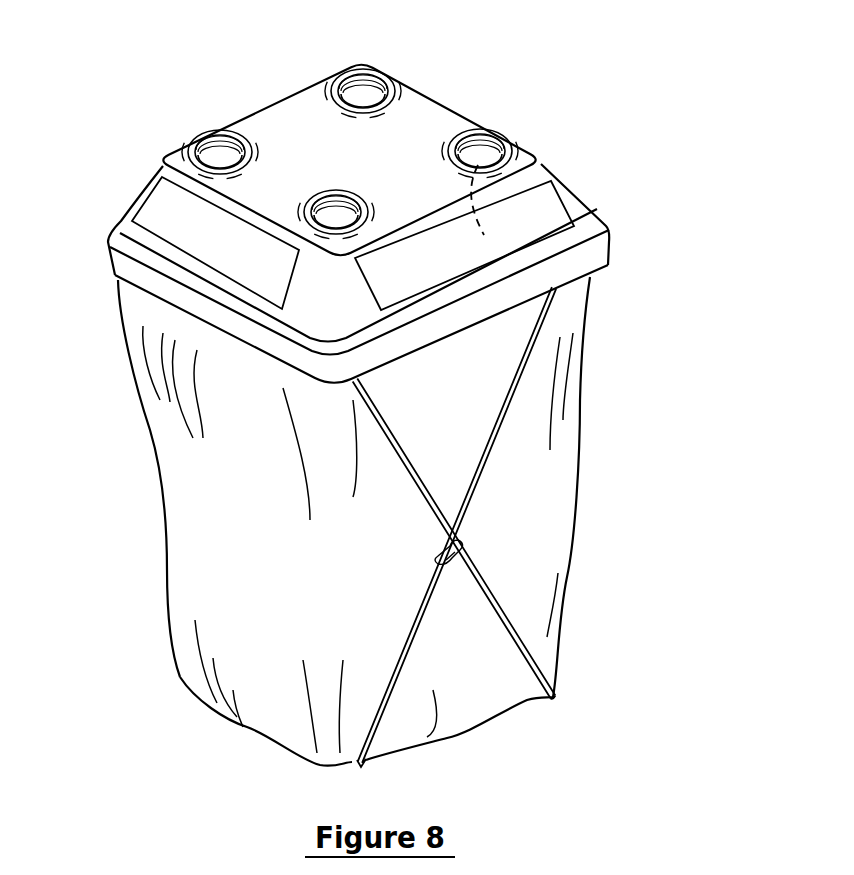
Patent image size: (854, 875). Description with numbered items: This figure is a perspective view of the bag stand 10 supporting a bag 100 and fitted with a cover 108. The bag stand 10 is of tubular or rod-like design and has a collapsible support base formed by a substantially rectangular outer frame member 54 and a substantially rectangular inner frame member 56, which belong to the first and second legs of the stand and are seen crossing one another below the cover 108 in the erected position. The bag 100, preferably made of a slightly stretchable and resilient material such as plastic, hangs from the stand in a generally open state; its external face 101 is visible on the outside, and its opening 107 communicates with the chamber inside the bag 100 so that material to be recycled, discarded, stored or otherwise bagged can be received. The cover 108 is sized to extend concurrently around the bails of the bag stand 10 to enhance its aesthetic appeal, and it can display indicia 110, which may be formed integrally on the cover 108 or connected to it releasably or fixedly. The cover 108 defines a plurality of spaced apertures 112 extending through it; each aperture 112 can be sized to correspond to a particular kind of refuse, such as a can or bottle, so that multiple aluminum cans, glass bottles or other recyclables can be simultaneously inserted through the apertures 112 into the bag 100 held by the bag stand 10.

The bag stand 10 is at (663, 247).
The outer frame member 54 is at (503, 603).
The inner frame member 56 is at (487, 470).
The bag 100 is at (193, 585).
The external face 101 is at (163, 497).
The opening 107 is at (478, 165).
The cover 108 is at (288, 117).
The indicia 110 is at (533, 207).
The aperture 112 is at (215, 153).